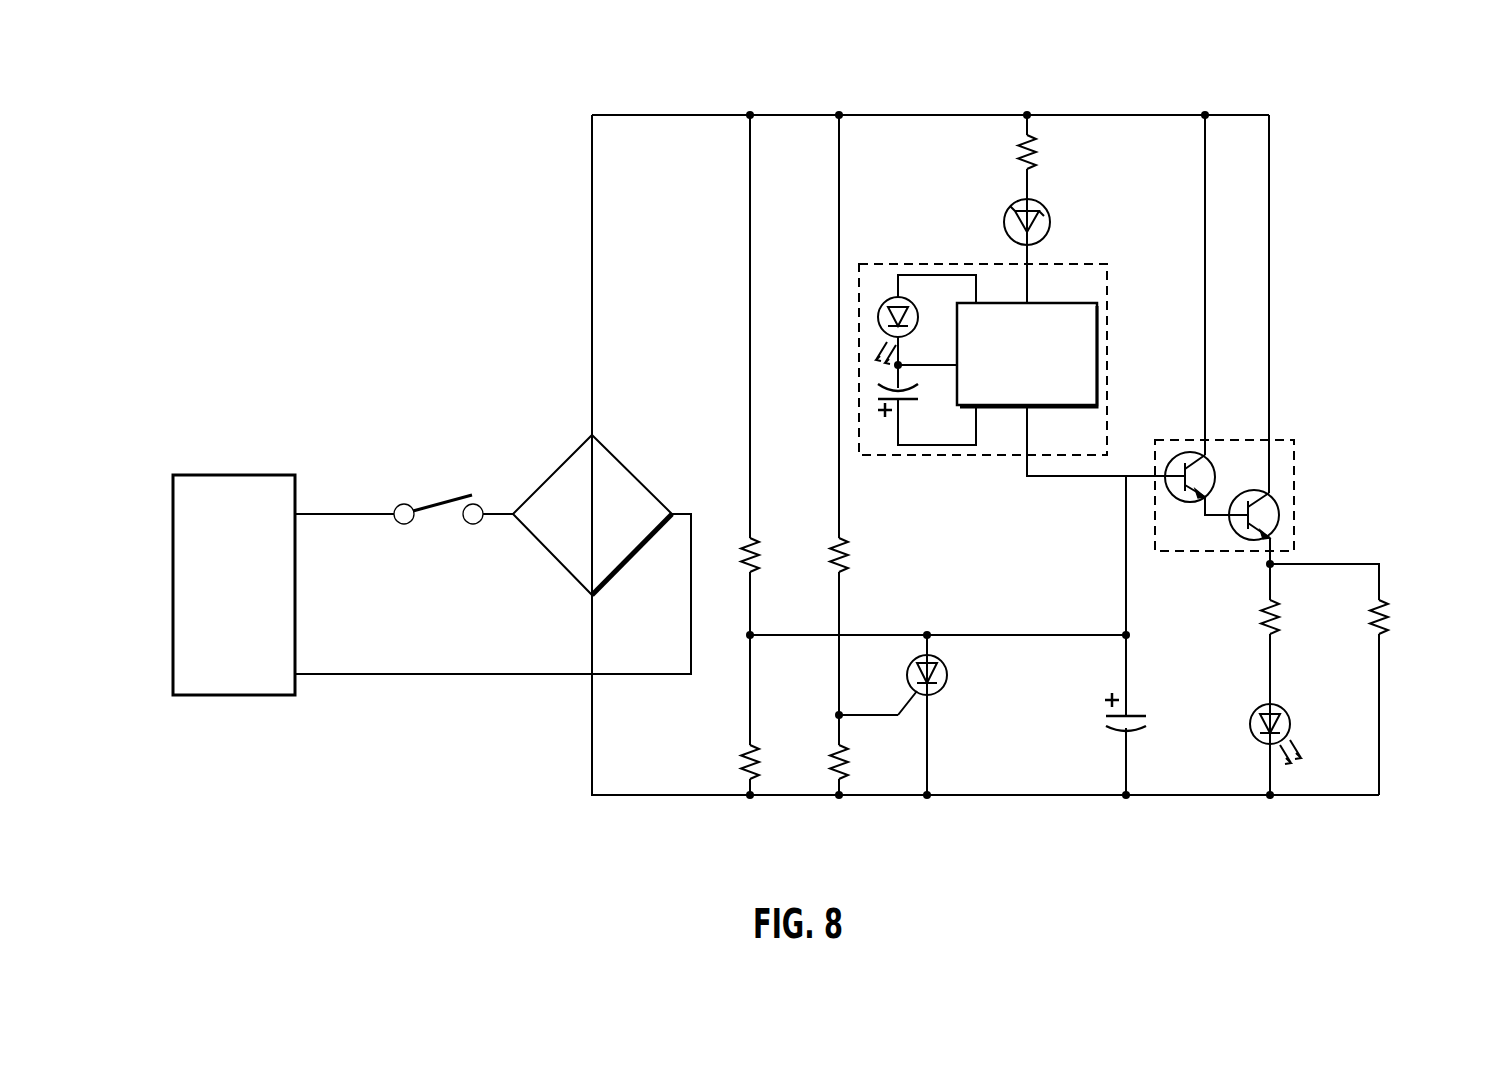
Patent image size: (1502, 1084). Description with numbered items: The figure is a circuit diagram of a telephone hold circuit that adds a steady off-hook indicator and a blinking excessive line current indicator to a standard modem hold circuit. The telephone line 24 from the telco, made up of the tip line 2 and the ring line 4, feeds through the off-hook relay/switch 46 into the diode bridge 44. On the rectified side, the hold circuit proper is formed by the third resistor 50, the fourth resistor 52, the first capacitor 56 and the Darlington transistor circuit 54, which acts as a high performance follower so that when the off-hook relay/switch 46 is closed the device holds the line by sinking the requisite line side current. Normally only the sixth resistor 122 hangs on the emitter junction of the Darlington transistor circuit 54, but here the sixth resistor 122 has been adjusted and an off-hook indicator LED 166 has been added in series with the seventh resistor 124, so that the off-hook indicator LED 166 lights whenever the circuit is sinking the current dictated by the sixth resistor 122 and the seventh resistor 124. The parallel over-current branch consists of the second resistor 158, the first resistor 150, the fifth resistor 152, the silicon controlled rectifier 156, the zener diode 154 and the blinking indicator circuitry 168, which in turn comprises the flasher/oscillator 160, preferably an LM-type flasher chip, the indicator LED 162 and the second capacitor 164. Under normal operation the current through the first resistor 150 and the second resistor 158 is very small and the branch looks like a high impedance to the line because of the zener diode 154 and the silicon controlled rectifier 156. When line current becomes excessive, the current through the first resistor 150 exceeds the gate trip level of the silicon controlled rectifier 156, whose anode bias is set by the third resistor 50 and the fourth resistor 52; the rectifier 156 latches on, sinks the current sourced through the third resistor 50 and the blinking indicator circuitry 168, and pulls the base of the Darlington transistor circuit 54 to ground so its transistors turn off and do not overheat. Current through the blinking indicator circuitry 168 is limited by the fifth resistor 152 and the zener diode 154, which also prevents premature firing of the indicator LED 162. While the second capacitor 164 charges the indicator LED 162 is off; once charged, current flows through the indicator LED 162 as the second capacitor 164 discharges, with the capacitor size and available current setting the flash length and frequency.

The telephone line 24 is at (236, 475).
The tip line 2 is at (365, 514).
The ring line 4 is at (364, 674).
The off-hook relay/switch 46 is at (473, 524).
The diode bridge 44 is at (624, 462).
The resistor R3 50 is at (741, 540).
The resistor R1 150 is at (832, 545).
The resistor R4 52 is at (743, 750).
The resistor R2 158 is at (833, 750).
The SCR 156 is at (945, 688).
The resistor R5 152 is at (1020, 162).
The zener diode ZD 154 is at (1006, 226).
The blinking indicator circuitry 168 is at (1097, 284).
The indicator LED1 162 is at (880, 318).
The capacitor C2 164 is at (885, 400).
The flasher/oscillator 160 is at (1098, 372).
The Darlington transistor circuit Q1 54 is at (1285, 446).
The capacitor C1 56 is at (1140, 715).
The resistor R7 124 is at (1278, 604).
The resistor R6 122 is at (1388, 604).
The off-hook indicator LED2 166 is at (1283, 711).